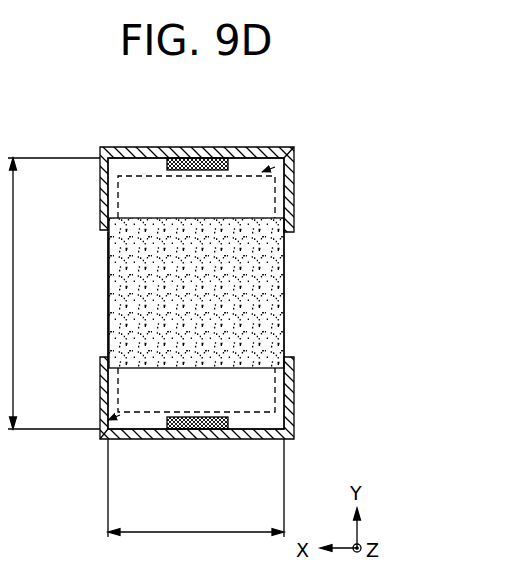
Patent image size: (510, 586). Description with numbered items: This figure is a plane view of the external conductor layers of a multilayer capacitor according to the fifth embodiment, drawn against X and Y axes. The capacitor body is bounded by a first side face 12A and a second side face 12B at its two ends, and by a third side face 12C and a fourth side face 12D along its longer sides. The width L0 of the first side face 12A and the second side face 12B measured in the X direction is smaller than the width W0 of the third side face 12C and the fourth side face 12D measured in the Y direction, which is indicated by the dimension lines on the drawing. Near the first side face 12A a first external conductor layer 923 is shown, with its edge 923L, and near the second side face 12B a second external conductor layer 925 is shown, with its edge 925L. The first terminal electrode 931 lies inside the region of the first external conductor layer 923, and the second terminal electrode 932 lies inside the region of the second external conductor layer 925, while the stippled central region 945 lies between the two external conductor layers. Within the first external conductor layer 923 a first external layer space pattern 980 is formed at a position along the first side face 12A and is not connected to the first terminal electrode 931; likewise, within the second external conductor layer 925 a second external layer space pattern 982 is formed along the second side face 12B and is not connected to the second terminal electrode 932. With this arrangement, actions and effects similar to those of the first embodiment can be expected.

The first side face 12A is at (264, 147).
The second side face 12B is at (136, 439).
The third side face 12C is at (284, 283).
The fourth side face 12D is at (108, 252).
The first external conductor layer 923 is at (215, 203).
The edge of first external electrode 923L is at (295, 147).
The second external conductor layer 925 is at (240, 392).
The edge of second external electrode 925L is at (102, 437).
The first terminal electrode 931 is at (100, 184).
The second terminal electrode 932 is at (100, 376).
The ceramic base region 945 is at (240, 320).
The first external layer space pattern 980 is at (195, 147).
The second external layer space pattern 982 is at (200, 439).
The width of the third and fourth side faces W0 is at (13, 293).
The width of the first and second side faces L0 is at (196, 488).